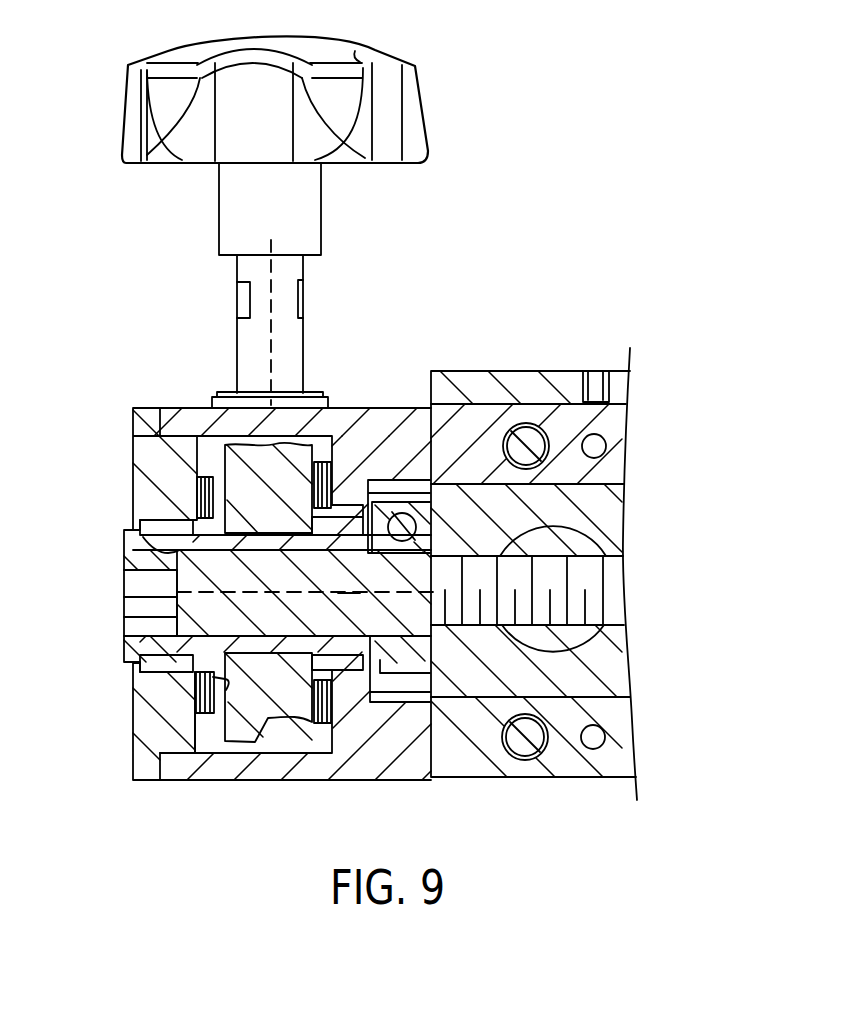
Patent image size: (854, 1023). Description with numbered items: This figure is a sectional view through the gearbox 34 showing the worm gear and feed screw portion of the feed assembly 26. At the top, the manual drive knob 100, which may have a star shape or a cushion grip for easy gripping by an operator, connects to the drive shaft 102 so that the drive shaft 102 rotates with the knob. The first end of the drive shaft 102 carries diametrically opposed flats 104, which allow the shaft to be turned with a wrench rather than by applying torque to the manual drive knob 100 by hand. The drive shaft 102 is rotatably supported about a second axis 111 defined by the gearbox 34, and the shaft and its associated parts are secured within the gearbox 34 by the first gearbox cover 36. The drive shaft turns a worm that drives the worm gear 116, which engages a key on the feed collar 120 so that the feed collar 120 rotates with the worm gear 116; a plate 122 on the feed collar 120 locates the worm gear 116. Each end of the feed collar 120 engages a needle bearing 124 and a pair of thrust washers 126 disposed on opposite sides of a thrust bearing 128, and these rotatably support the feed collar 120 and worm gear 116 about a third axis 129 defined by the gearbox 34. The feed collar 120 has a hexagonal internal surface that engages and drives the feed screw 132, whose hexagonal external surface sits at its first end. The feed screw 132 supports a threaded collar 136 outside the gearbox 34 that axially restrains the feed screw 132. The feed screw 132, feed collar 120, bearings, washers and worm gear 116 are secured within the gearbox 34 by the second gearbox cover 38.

The manual drive knob 100 is at (430, 102).
The drive shaft 102 is at (305, 268).
The flats 104 is at (303, 300).
The feed assembly 26 is at (382, 313).
The second axis 111 is at (271, 370).
The first gearbox cover 36 is at (320, 393).
The needle bearing 124 is at (124, 562).
The feed screw 132 is at (124, 598).
The feed collar 120 is at (124, 626).
The thrust washers 126 is at (337, 483).
The thrust bearing 128 is at (197, 494).
The plate 122 is at (213, 680).
The second gearbox cover 38 is at (135, 763).
The gearbox 34 is at (292, 768).
The worm gear 116 is at (222, 733).
The third axis 129 is at (340, 592).
The threaded collar 136 is at (468, 397).